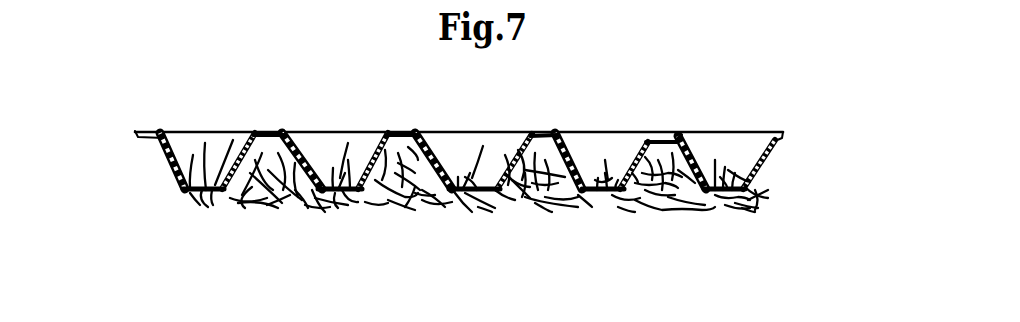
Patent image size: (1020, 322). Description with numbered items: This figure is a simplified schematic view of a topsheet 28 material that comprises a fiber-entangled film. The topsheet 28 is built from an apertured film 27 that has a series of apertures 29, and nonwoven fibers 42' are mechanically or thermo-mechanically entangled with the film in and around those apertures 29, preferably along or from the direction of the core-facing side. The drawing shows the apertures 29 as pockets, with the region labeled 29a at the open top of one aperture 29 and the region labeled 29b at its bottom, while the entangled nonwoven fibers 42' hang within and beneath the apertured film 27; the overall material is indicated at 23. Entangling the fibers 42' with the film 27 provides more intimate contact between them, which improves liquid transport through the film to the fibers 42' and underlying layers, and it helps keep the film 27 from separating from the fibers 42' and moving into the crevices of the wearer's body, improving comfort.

The composite mat 23 is at (140, 177).
The apertured film 27 is at (783, 134).
The topsheet 28 is at (708, 98).
The apertures 29 is at (348, 143).
The pocket opening 29a is at (648, 130).
The pocket bottom 29b is at (613, 205).
The nonwoven fibers 42' is at (479, 201).